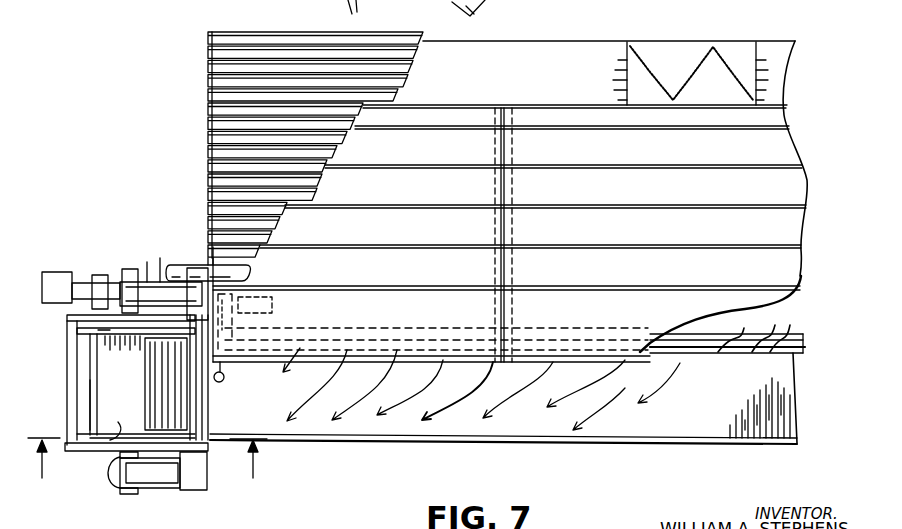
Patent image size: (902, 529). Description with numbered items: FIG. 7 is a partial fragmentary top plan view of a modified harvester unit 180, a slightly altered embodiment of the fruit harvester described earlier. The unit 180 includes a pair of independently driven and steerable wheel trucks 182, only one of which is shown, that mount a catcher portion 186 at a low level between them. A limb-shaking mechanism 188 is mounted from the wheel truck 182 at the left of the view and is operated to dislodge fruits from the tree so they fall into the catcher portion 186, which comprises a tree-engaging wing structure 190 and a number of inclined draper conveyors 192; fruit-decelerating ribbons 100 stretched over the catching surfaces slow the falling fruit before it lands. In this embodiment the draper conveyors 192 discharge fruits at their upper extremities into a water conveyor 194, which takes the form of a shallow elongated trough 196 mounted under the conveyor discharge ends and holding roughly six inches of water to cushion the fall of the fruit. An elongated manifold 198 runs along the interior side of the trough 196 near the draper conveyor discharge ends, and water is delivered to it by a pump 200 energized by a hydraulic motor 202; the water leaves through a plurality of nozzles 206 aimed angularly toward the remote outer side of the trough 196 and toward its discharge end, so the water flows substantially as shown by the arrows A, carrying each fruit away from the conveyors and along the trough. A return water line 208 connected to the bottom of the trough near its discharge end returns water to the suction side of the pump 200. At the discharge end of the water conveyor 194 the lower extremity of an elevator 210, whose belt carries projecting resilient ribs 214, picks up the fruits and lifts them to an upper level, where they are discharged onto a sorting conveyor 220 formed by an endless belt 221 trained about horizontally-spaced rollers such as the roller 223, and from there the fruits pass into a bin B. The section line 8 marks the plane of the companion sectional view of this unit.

The section line 8- 8 is at (147, 473).
The ribbons 100 is at (257, 130).
The modified harvester unit 180 is at (257, 130).
The wheel truck 182 is at (200, 262).
The catcher portion 186 is at (290, 23).
The limb-shaking mechanism 188 is at (190, 264).
The tree-engaging wing structure 190 is at (548, 81).
The inclined draper conveyors 192 is at (425, 197).
The water conveyor 194 is at (622, 453).
The trough 196 is at (710, 425).
The manifold 198 is at (810, 347).
The pump 200 is at (237, 296).
The hydraulic motor 202 is at (273, 305).
The nozzles 206 is at (723, 314).
The return water line 208 is at (240, 376).
The elevator 210 is at (183, 412).
The resilient ribs 214 is at (172, 383).
The sorting conveyor 220 is at (90, 412).
The endless belt 221 is at (123, 420).
The roller 223 is at (100, 330).
The arrows A is at (465, 392).
The bin B is at (78, 368).